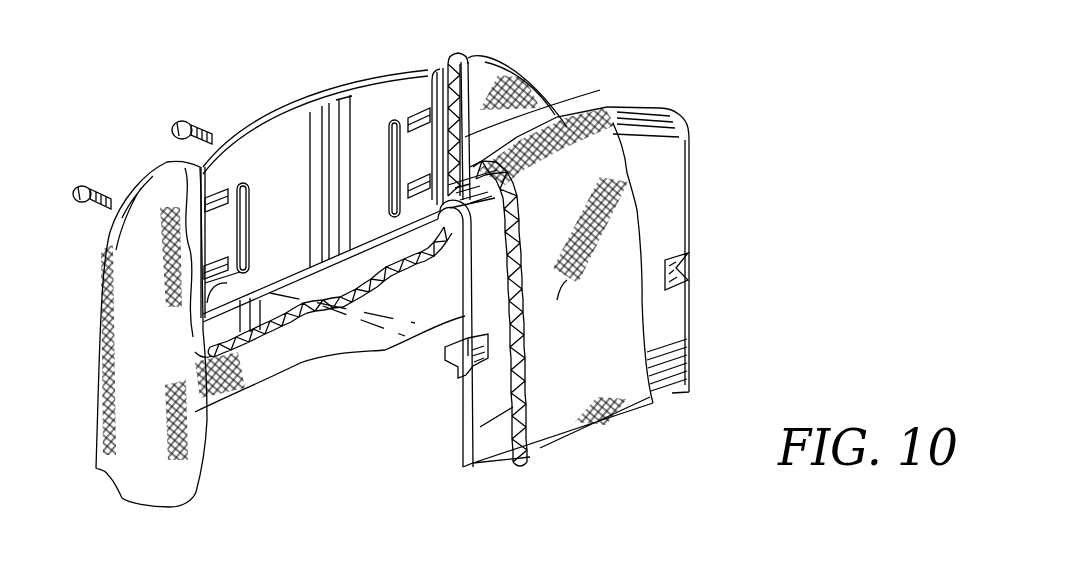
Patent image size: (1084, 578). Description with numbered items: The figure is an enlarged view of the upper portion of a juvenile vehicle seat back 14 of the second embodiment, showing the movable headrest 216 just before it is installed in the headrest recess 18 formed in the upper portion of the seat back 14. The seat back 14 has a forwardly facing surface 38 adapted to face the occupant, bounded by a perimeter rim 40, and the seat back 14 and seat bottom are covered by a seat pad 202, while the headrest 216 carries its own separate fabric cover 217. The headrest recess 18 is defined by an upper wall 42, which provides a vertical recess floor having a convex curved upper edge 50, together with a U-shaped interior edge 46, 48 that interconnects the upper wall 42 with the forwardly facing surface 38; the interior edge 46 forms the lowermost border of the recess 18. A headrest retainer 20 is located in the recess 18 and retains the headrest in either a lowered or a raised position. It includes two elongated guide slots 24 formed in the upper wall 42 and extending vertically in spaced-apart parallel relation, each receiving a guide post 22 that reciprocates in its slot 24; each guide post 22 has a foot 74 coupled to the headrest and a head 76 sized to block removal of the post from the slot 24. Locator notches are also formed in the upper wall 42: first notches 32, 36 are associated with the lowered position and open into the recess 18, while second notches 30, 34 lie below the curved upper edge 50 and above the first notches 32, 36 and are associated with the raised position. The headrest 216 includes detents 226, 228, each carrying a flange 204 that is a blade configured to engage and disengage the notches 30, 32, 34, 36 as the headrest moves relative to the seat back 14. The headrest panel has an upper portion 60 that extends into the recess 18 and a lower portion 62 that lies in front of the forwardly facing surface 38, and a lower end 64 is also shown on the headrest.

The seat back 14 is at (409, 252).
The headrest recess 18 is at (396, 104).
The headrest retainer 20 is at (142, 164).
The guide post 22 is at (100, 182).
The guide slot 24 is at (389, 124).
The second notch 30 is at (216, 192).
The first notch 32 is at (201, 308).
The second notch 34 is at (428, 105).
The first notch 36 is at (414, 182).
The forwardly facing surface 38 is at (285, 312).
The perimeter rim 40 is at (152, 420).
The upper wall 42 is at (272, 146).
The interior edge 46 is at (311, 270).
The interior edge 48 is at (546, 116).
The convex curved upper edge 50 is at (343, 90).
The upper portion 60 is at (672, 176).
The lower portion 62 is at (490, 452).
The lower end 64 is at (673, 394).
The foot 74 is at (207, 131).
The head 76 is at (177, 121).
The seat pad 202 is at (565, 120).
The flange 204 is at (442, 356).
The movable headrest 216 is at (690, 105).
The fabric cover 217 is at (607, 300).
The detent 226 is at (454, 382).
The detent 228 is at (695, 261).